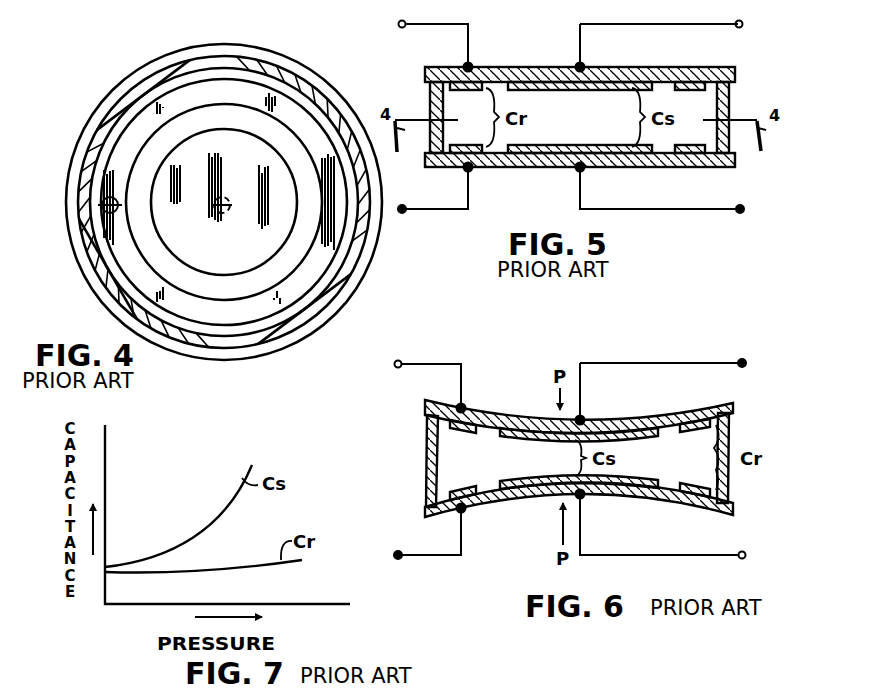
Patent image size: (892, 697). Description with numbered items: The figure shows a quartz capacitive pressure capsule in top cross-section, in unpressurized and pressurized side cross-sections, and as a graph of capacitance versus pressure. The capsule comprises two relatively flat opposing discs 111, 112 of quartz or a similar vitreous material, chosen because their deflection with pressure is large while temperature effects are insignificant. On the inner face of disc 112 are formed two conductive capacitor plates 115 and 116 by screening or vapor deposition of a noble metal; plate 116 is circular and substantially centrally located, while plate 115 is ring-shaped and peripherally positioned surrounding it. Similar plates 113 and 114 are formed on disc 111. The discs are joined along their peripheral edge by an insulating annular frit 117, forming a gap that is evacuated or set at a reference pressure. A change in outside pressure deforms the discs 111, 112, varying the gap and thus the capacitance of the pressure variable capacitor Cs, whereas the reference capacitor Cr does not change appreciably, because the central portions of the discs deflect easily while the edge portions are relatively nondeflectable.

In FIG. 5, the disc 111 is at (527, 67).
In FIG. 6, the disc 111 is at (630, 423).
In FIG. 4, the disc 112 is at (107, 105).
In FIG. 5, the disc 112 is at (519, 167).
In FIG. 6, the disc 112 is at (663, 498).
In FIG. 5, the capacitor plate 113 is at (478, 80).
In FIG. 6, the capacitor plate 113 is at (468, 420).
In FIG. 5, the capacitor plate 114 is at (620, 76).
In FIG. 6, the capacitor plate 114 is at (523, 412).
In FIG. 4, the capacitor plate 115 is at (220, 92).
In FIG. 5, the capacitor plate 115 is at (462, 158).
In FIG. 6, the capacitor plate 115 is at (476, 502).
In FIG. 4, the capacitor plate 116 is at (180, 242).
In FIG. 5, the capacitor plate 116 is at (632, 158).
In FIG. 6, the capacitor plate 116 is at (555, 494).
In FIG. 4, the annular frit 117 is at (304, 86).
In FIG. 5, the annular frit 117 is at (726, 98).
In FIG. 6, the annular frit 117 is at (730, 432).